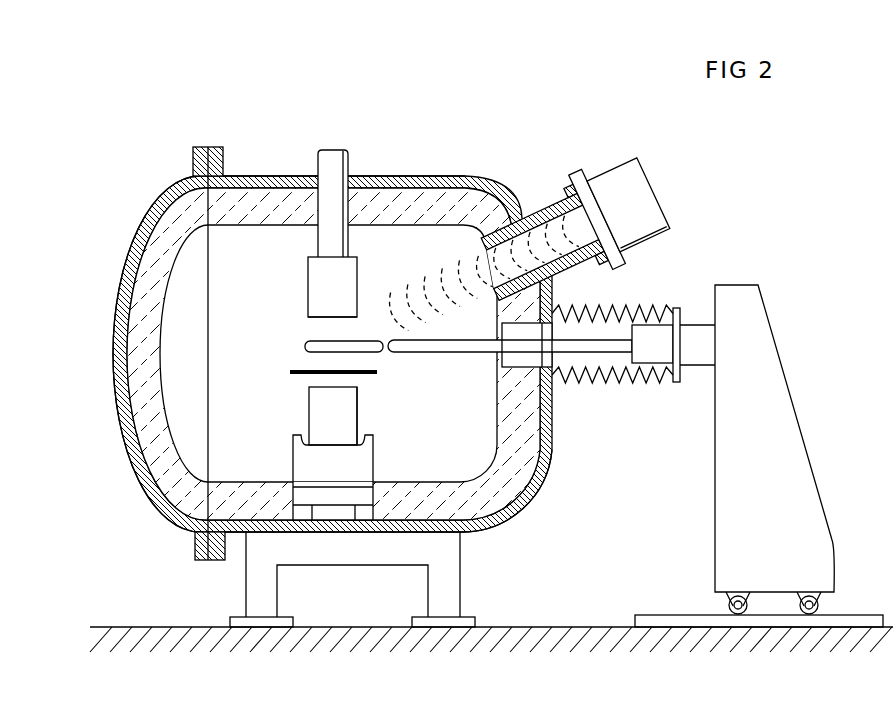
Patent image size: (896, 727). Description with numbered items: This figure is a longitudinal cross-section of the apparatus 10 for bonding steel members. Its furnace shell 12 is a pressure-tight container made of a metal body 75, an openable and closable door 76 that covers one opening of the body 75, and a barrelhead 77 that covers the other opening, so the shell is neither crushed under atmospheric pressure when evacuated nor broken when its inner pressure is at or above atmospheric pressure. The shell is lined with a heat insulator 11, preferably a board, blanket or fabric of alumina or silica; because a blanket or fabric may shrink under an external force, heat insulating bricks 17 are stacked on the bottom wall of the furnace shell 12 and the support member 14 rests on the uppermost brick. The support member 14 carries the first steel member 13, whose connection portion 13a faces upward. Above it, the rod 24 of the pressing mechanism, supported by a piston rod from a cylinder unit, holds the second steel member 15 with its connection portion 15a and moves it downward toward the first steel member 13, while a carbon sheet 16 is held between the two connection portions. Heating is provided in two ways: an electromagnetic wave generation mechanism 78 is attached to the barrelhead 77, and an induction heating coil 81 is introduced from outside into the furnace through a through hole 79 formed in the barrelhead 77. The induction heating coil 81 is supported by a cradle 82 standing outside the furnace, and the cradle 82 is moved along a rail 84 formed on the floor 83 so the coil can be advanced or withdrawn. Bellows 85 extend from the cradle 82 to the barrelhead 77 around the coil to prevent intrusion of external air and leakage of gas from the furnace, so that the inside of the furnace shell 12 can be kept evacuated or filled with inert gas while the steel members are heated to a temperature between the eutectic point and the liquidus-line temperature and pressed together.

The apparatus 10 is at (100, 167).
The heat insulator 11 is at (280, 217).
The furnace shell 12 is at (457, 177).
The first steel member 13 is at (321, 417).
The connection portion 13a is at (353, 398).
The support member 14 is at (366, 465).
The second steel member 15 is at (326, 287).
The connection portion 15a is at (329, 313).
The carbon sheet 16 is at (312, 371).
The heat insulating bricks 17 is at (358, 512).
The rod 24 is at (310, 168).
The metal body 75 is at (400, 175).
The door 76 is at (114, 350).
The barrelhead 77 is at (536, 463).
The electromagnetic wave generation mechanism 78 is at (645, 197).
The through hole 79 is at (501, 363).
The induction heating coil 81 is at (447, 353).
The cradle 82 is at (790, 447).
The floor 83 is at (571, 625).
The rail 84 is at (652, 614).
The bellows 85 is at (596, 384).